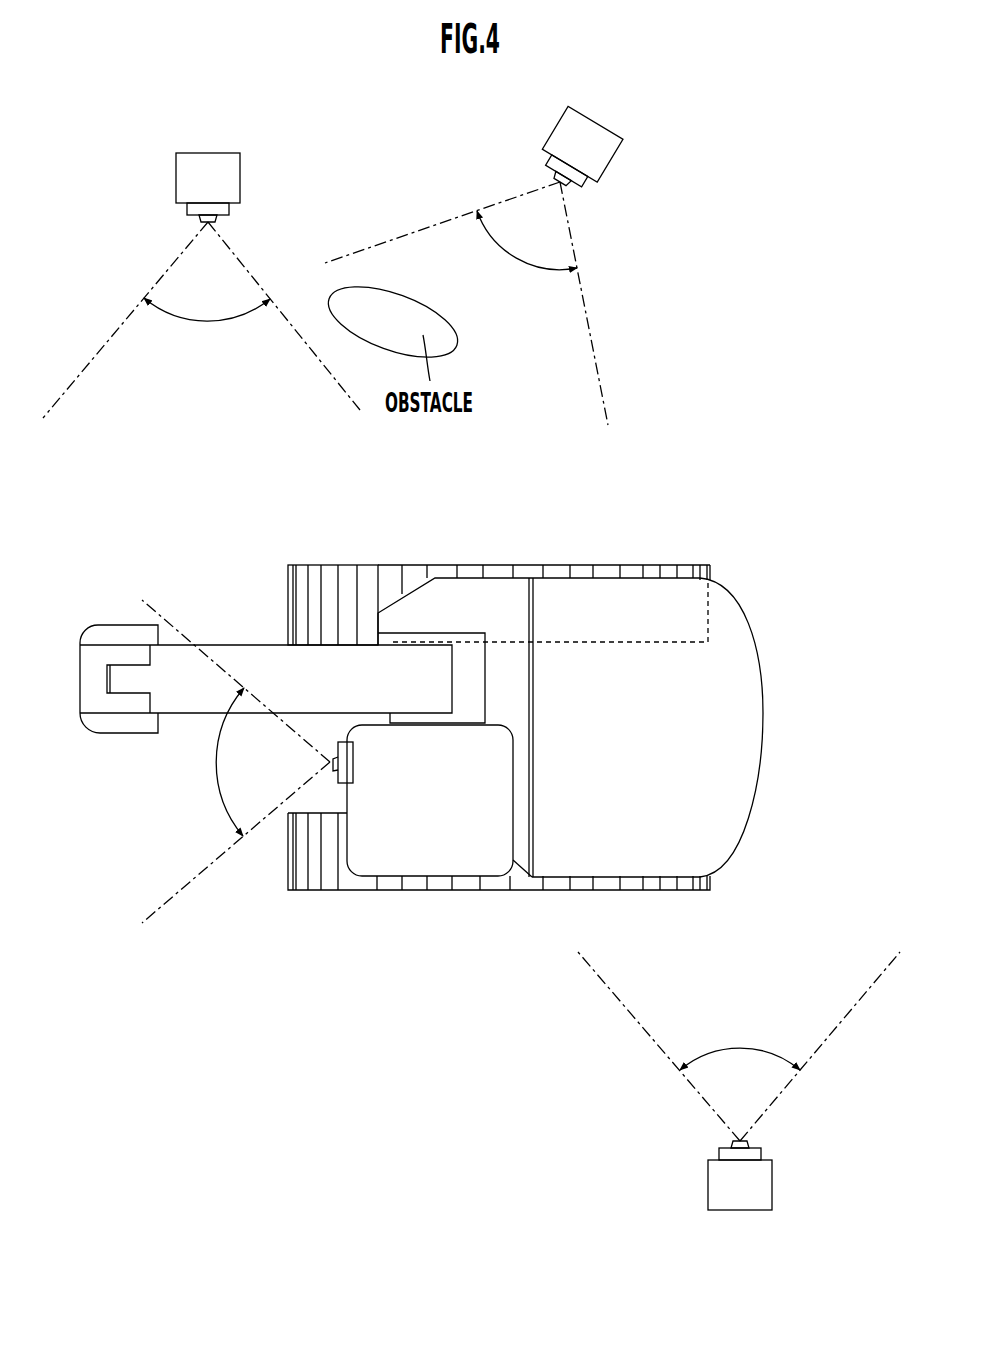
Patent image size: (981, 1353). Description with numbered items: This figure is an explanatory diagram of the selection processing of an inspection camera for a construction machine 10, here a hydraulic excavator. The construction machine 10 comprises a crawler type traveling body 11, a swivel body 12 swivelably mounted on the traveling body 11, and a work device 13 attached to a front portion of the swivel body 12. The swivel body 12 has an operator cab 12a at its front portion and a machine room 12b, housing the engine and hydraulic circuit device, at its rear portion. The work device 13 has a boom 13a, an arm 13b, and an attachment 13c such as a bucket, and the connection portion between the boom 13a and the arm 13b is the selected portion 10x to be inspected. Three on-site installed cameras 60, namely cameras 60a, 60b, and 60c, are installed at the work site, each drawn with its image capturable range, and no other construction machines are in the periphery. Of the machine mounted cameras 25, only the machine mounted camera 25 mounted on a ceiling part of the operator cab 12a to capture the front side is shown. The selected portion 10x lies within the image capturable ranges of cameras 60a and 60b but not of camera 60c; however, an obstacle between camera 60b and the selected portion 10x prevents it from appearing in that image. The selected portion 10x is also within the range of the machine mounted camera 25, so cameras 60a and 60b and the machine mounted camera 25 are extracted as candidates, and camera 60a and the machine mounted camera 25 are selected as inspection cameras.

The construction machine 10 is at (280, 532).
The selected portion to be inspected 10x is at (131, 640).
The traveling body 11 is at (279, 898).
The swivel body 12 is at (433, 724).
The operator cab 12a is at (423, 860).
The machine room 12b is at (745, 772).
The work device 13 is at (251, 673).
The boom 13a is at (222, 657).
The arm 13b is at (93, 662).
The attachment 13c is at (110, 722).
The machine mounted camera 25 is at (350, 770).
The on-site installed camera 60 is at (471, 658).
The on-site installed camera 60a is at (232, 207).
The on-site installed camera 60b is at (549, 152).
The on-site installed camera 60c is at (763, 1158).